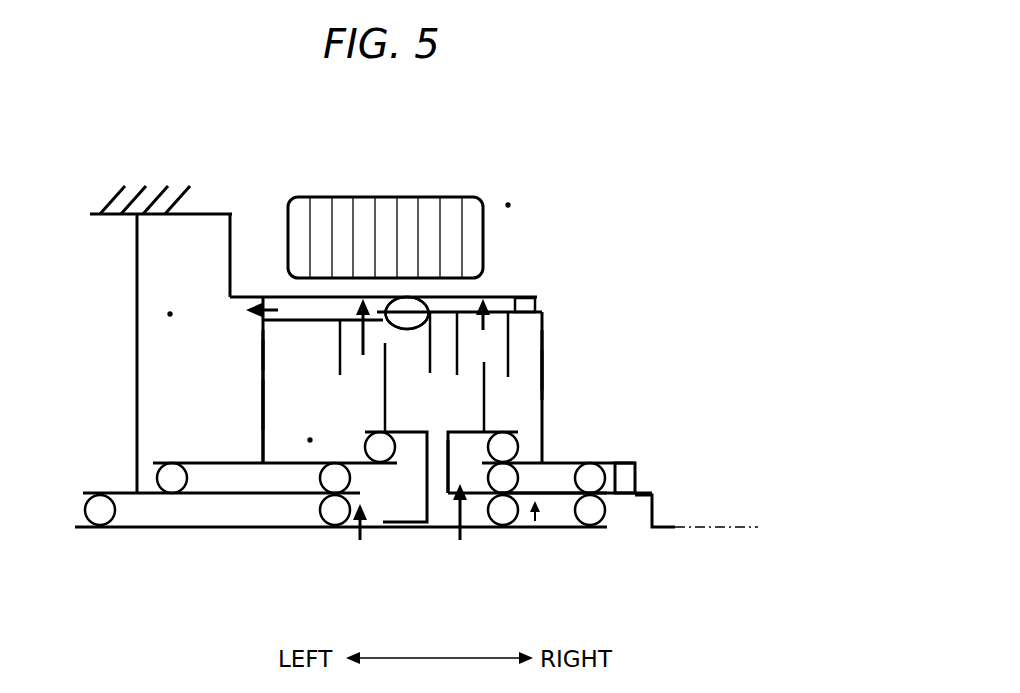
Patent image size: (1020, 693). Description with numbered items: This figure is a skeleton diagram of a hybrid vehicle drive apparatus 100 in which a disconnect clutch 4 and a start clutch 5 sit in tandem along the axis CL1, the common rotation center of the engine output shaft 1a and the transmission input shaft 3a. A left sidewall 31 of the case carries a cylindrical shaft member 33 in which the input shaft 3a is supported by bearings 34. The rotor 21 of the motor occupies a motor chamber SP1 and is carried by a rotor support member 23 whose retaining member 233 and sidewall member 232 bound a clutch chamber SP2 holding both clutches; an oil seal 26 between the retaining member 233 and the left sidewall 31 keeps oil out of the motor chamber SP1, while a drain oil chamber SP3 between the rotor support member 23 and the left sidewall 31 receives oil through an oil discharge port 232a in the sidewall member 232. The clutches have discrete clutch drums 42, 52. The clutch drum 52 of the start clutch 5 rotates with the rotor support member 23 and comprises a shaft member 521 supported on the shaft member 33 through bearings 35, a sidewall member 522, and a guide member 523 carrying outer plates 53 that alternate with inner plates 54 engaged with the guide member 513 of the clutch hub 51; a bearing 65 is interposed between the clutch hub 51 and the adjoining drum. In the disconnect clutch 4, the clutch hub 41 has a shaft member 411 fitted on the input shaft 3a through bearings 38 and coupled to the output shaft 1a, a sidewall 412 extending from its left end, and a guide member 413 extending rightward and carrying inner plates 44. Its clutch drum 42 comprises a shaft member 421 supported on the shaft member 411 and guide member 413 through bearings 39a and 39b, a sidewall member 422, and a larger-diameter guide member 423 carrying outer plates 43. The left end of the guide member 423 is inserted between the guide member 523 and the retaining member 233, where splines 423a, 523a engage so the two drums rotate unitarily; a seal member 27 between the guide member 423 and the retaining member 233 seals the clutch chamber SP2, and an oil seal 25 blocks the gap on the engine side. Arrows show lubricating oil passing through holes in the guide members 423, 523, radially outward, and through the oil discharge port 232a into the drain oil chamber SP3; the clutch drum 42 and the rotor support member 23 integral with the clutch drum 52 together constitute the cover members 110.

The sheet conveying device 100 is at (535, 138).
The motor chamber SP1 is at (508, 205).
The clutch chamber SP2 is at (310, 442).
The drain oil chamber SP3 is at (170, 314).
The cover members 110 is at (304, 287).
The retaining member 233 is at (333, 297).
The spline 423a is at (390, 296).
The spline 523a is at (407, 313).
The guide member 523 is at (292, 320).
The rotor 21 is at (484, 238).
The oil seal 26 is at (230, 273).
The guide member 423 is at (498, 310).
The seal member 27 is at (538, 303).
The oil discharge port 232a is at (262, 318).
The outer plates 43 is at (510, 338).
The disconnect clutch 4 is at (529, 360).
The sidewall member 422 is at (543, 372).
The clutch drum 42 is at (552, 386).
The shaft member 421 is at (580, 463).
The sidewall member 522 is at (262, 357).
The clutch drum 52 is at (256, 373).
The outer plates 53 is at (340, 350).
The start clutch 5 is at (319, 404).
The inner plates 54 is at (385, 397).
The guide member 413 is at (450, 428).
The inner plates 44 is at (485, 382).
The sidewall member 232 is at (262, 390).
The rotor support member 23 is at (256, 409).
The left sidewall 31 is at (137, 408).
The bearing 39b is at (520, 437).
The bearing 39a is at (593, 466).
The oil seal 25 is at (637, 480).
The output shaft 1a is at (665, 523).
The axis CL1 is at (738, 527).
The guide member 513 is at (392, 465).
The clutch hub 51 is at (432, 527).
The bearings 34 is at (96, 524).
The bearings 35 is at (168, 485).
The input shaft 3a is at (182, 528).
The shaft member 521 is at (226, 463).
The shaft member 33 is at (259, 493).
The bearing 65 is at (375, 540).
The sidewall 412 is at (443, 482).
The bearings 38 is at (503, 526).
The clutch hub 41 is at (537, 524).
The shaft member 411 is at (560, 495).